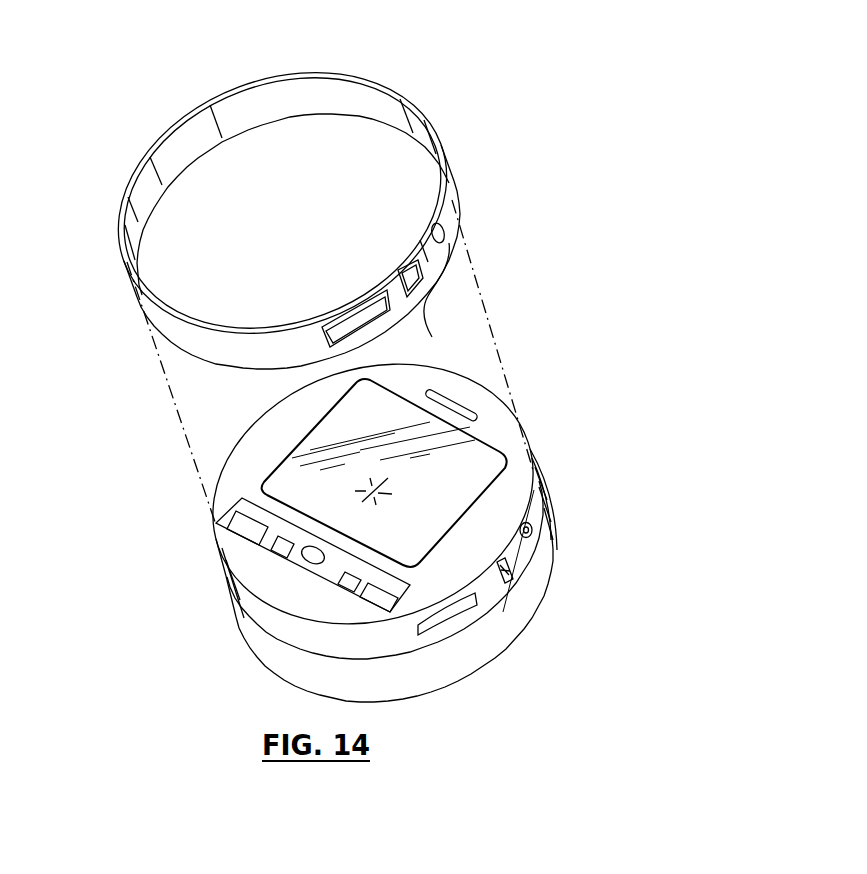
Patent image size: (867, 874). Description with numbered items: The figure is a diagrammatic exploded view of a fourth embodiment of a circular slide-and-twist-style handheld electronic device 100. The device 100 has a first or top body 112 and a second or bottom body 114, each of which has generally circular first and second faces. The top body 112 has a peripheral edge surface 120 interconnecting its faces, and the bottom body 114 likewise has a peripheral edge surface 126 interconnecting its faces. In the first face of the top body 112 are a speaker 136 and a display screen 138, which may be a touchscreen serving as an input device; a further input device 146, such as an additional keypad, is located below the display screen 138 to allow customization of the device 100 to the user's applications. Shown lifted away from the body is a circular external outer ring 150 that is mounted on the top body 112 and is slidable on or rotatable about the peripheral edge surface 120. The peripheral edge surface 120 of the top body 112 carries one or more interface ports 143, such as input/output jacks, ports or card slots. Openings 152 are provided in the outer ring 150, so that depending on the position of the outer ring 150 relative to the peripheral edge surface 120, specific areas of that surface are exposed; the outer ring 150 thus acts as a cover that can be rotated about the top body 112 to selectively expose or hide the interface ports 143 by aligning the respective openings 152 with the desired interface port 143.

The handheld electronic device 100 is at (594, 370).
The top body 112 is at (532, 455).
The bottom body 114 is at (552, 517).
The peripheral edge surface 120 is at (357, 653).
The peripheral edge surface 126 is at (385, 695).
The speaker 136 is at (467, 415).
The display screen 138 is at (460, 505).
The interface port 143 is at (448, 625).
The further input device 146 is at (242, 533).
The outer ring 150 is at (433, 133).
The opening 152 is at (380, 318).